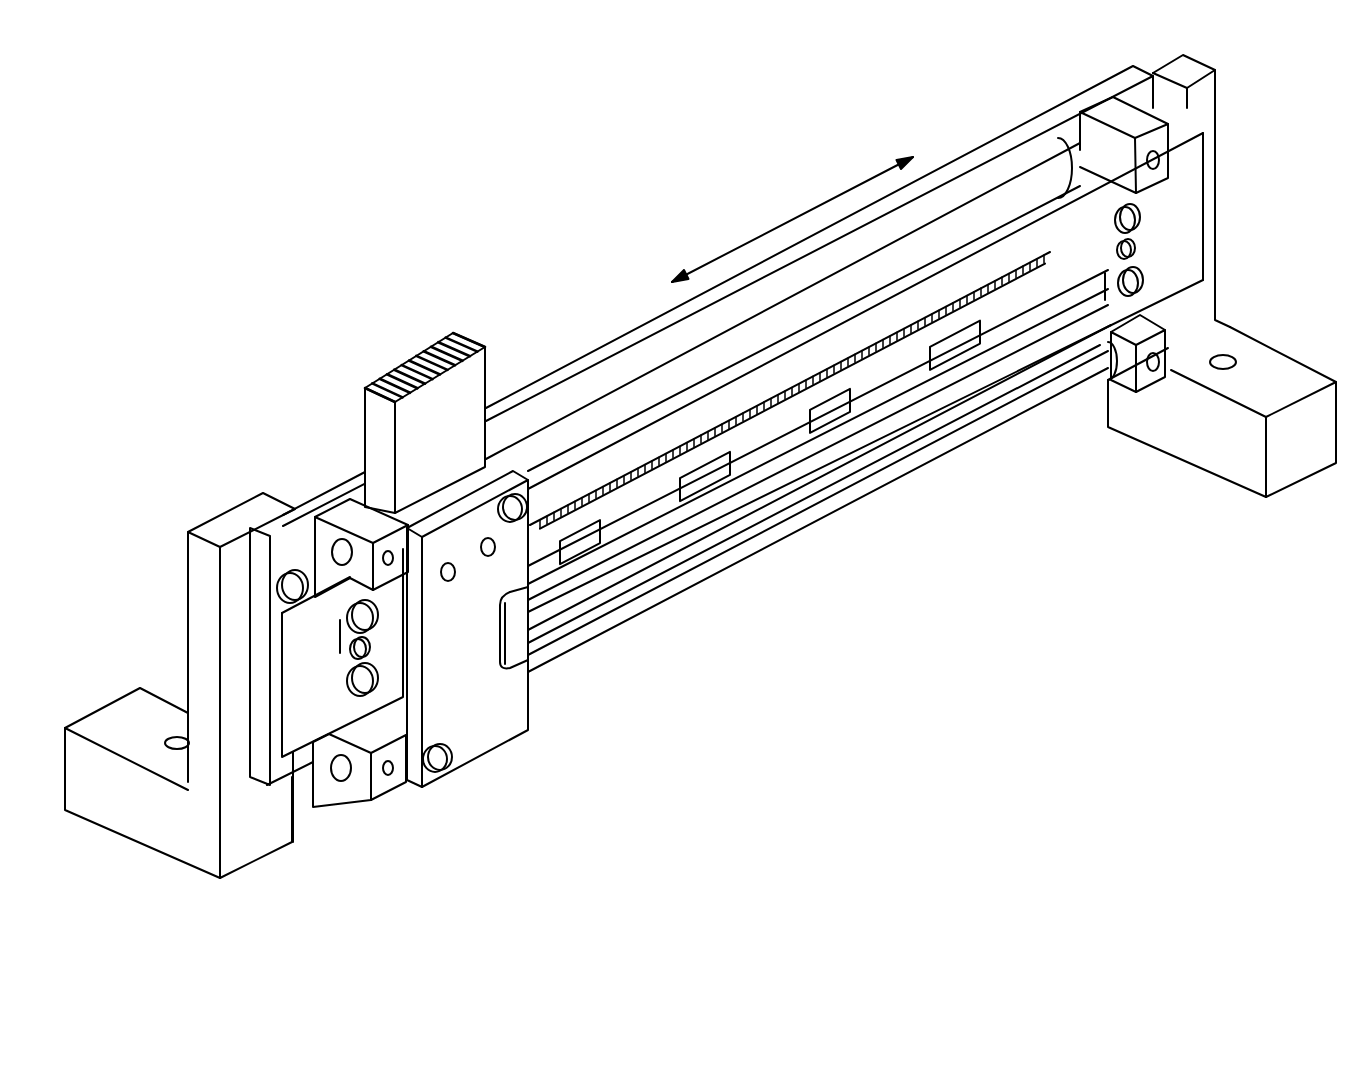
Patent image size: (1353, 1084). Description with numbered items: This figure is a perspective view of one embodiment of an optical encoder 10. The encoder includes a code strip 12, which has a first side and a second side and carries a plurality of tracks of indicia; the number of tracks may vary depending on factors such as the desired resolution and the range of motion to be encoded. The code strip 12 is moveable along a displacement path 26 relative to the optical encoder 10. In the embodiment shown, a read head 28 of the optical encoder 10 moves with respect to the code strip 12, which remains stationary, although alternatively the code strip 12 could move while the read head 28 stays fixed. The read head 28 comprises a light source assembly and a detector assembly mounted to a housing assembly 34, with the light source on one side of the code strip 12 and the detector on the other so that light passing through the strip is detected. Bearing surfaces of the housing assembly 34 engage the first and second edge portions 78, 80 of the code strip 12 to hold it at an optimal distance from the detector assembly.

The optical encoder 10 is at (262, 226).
The code strip 12 is at (837, 461).
The displacement path 26 is at (810, 207).
The read head 28 is at (499, 738).
The housing assembly 34 is at (352, 792).
The first edge portion 78 is at (1062, 195).
The second edge portion 80 is at (1216, 318).